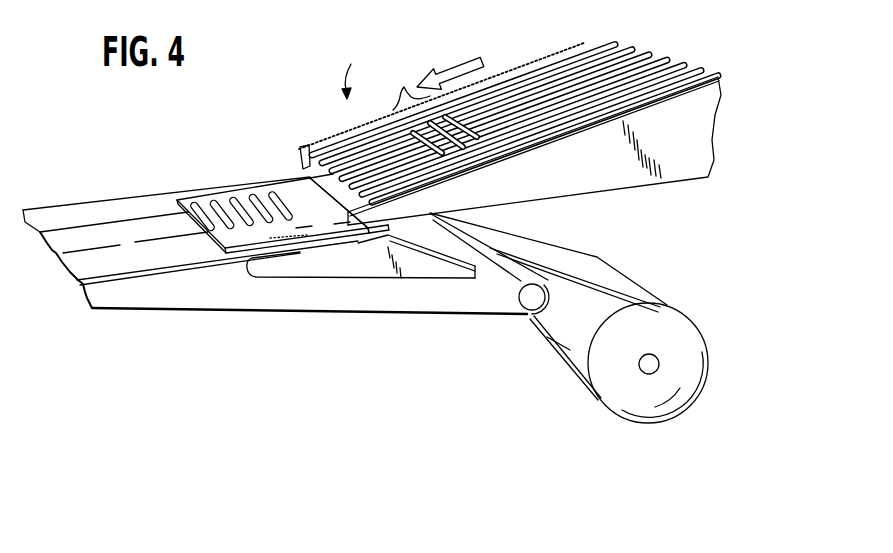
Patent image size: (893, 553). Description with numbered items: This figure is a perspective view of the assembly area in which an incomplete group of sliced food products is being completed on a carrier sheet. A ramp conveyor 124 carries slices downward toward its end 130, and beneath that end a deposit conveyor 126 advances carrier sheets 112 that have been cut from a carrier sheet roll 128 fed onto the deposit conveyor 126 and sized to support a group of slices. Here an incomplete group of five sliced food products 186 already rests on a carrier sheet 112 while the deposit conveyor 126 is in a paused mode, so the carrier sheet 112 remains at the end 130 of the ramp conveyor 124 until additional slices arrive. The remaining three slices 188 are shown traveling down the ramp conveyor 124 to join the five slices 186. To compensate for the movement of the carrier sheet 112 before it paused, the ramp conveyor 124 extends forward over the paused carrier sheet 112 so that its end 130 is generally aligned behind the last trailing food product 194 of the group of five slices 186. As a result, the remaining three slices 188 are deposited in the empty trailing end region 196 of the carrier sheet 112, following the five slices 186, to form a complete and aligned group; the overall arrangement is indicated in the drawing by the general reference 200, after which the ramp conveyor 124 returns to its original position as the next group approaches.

The carrier sheet 112 is at (305, 197).
The ramp conveyor 124 is at (553, 56).
The deposit conveyor 126 is at (133, 197).
The carrier sheet roll 128 is at (702, 336).
The end of the ramp conveyor 130 is at (314, 150).
The incomplete group of five sliced food products 186 is at (273, 172).
The remaining three slices 188 is at (438, 82).
The last trailing food product 194 is at (307, 222).
The empty trailing end region 196 is at (342, 221).
The apparatus 200 is at (356, 68).